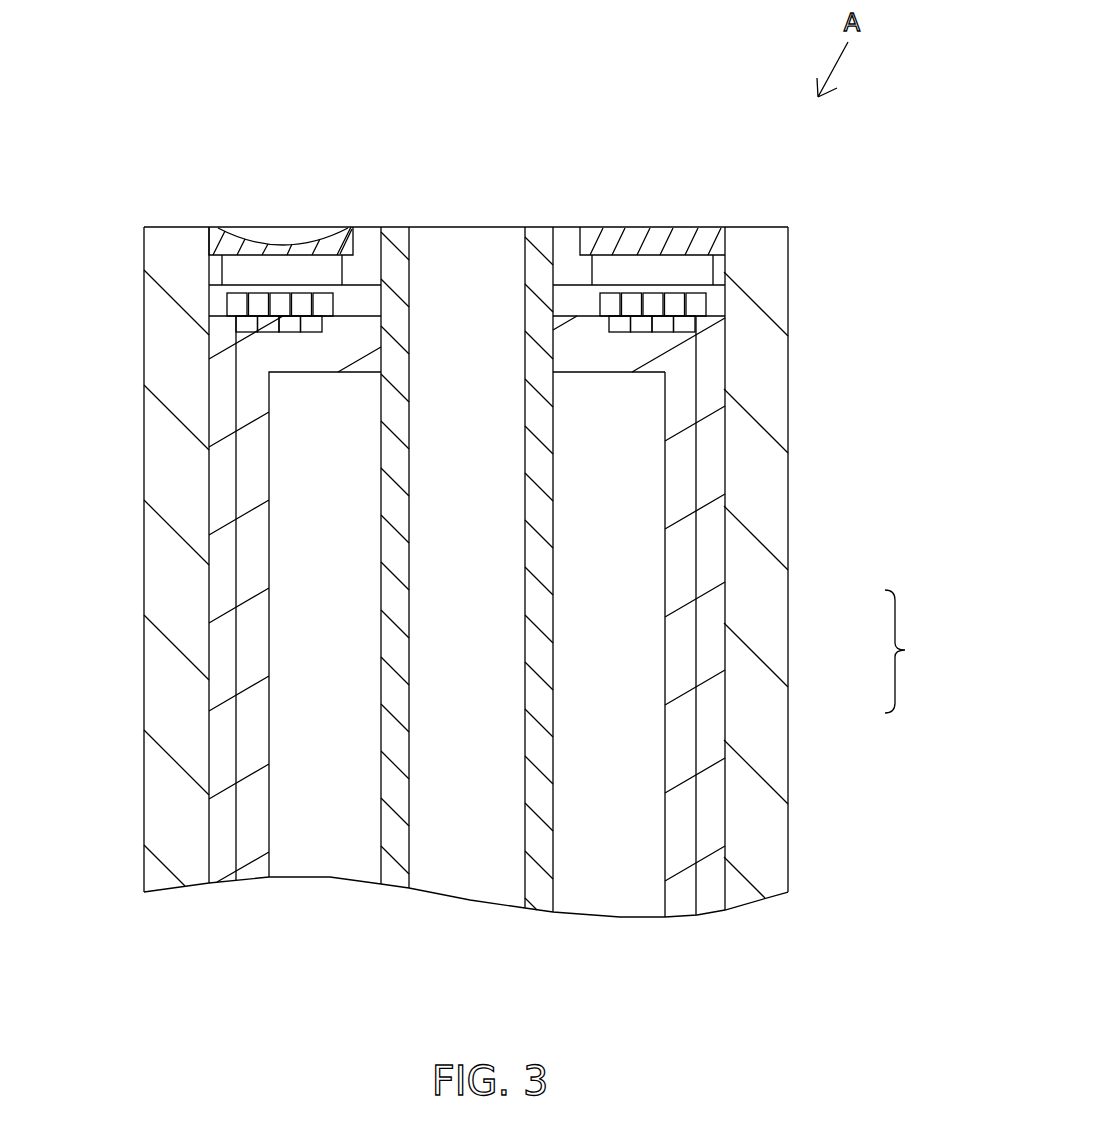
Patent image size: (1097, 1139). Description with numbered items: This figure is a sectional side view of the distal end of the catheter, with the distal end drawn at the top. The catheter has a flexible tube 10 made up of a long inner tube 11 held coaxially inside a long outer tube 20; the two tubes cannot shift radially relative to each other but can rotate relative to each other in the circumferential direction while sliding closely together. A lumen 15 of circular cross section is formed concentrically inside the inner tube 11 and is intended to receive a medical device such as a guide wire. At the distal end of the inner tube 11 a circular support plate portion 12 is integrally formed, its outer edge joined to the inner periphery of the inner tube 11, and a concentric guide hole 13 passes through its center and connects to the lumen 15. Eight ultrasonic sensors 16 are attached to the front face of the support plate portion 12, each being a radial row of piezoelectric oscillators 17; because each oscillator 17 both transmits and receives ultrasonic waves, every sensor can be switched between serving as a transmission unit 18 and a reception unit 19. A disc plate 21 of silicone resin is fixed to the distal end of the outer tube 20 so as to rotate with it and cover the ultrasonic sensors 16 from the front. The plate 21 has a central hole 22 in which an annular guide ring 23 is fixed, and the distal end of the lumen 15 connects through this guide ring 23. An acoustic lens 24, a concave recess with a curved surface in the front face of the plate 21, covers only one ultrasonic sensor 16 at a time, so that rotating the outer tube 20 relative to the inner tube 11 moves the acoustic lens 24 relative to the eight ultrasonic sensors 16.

The tube 10 is at (913, 651).
The inner tube 11 is at (697, 708).
The support plate portion 12 is at (605, 362).
The guide hole 13 is at (553, 340).
The lumen 15 is at (540, 803).
The ultrasonic sensors 16 is at (237, 305).
The oscillators 17 is at (698, 303).
The transmission unit 18 is at (197, 262).
The reception unit 19 is at (747, 267).
The outer tube 20 is at (770, 600).
The plate 21 is at (610, 238).
The central hole 22 is at (573, 242).
The guide ring 23 is at (362, 275).
The acoustic lens 24 is at (252, 248).